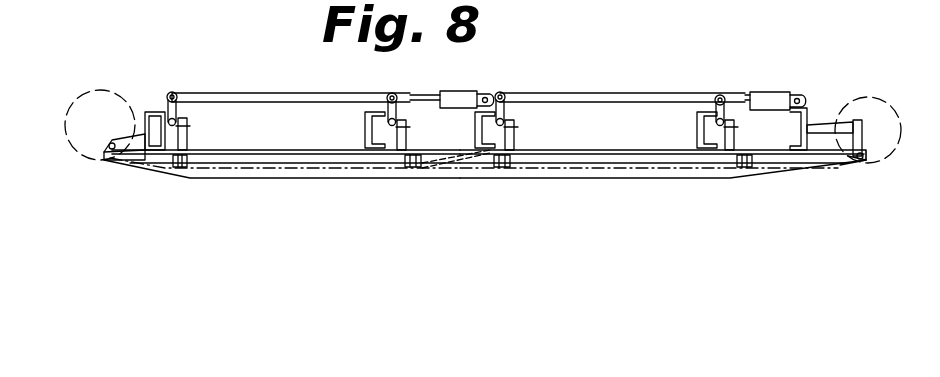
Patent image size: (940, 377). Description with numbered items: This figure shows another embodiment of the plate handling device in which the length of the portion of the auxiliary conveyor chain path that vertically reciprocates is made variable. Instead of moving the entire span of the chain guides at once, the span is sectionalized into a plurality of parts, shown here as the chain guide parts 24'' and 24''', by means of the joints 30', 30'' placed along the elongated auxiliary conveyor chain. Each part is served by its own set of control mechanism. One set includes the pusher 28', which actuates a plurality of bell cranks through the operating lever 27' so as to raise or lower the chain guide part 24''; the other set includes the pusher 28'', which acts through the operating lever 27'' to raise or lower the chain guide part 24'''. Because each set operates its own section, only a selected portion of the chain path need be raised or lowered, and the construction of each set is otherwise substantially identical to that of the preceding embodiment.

The chain guide part 24'' is at (297, 162).
The chain guide part 24''' is at (663, 162).
The operating lever 27' is at (291, 77).
The operating lever 27'' is at (622, 77).
The pusher 28' is at (470, 80).
The pusher 28'' is at (779, 81).
The joint 30' is at (417, 194).
The joint 30'' is at (501, 194).